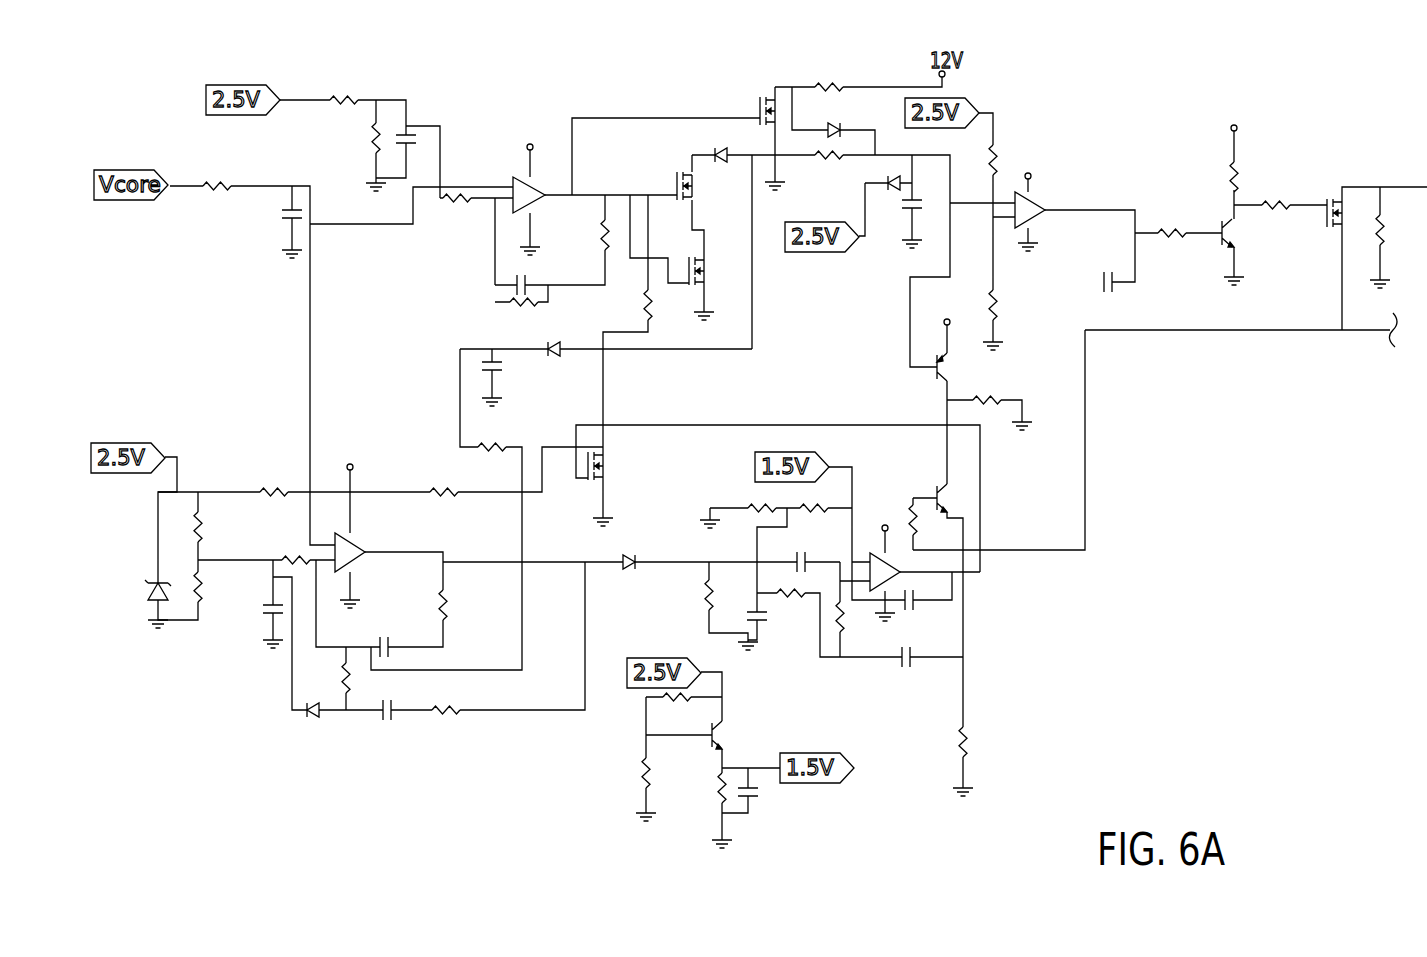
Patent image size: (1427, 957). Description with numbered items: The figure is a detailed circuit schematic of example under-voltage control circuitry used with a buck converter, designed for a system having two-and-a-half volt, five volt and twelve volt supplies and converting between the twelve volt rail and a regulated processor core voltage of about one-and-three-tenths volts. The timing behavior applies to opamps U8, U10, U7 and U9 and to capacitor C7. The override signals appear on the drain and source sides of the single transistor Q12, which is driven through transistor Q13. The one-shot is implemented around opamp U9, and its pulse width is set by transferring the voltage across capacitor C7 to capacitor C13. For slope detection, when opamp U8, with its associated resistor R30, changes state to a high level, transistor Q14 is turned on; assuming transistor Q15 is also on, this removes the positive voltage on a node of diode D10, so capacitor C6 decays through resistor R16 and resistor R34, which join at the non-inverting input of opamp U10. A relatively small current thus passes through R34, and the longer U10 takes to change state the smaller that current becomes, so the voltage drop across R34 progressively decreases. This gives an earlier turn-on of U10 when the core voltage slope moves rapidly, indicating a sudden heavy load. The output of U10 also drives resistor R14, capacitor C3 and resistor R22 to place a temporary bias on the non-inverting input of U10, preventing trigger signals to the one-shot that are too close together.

The opamp U8 is at (519, 186).
The resistor R30 is at (587, 235).
The transistor Q15 is at (704, 186).
The transistor Q14 is at (717, 271).
The capacitor C7 is at (899, 221).
The opamp U7 is at (1043, 199).
The transistor Q13 is at (1217, 192).
The transistor Q12 is at (1363, 251).
The diode D10 is at (556, 366).
The capacitor C6 is at (483, 384).
The resistor R16 is at (496, 435).
The opamp U10 is at (368, 523).
The resistor R34 is at (289, 547).
The resistor R22 is at (326, 678).
The capacitor C3 is at (386, 726).
The resistor R14 is at (451, 729).
The opamp U9 is at (889, 559).
The capacitor C13 is at (916, 614).